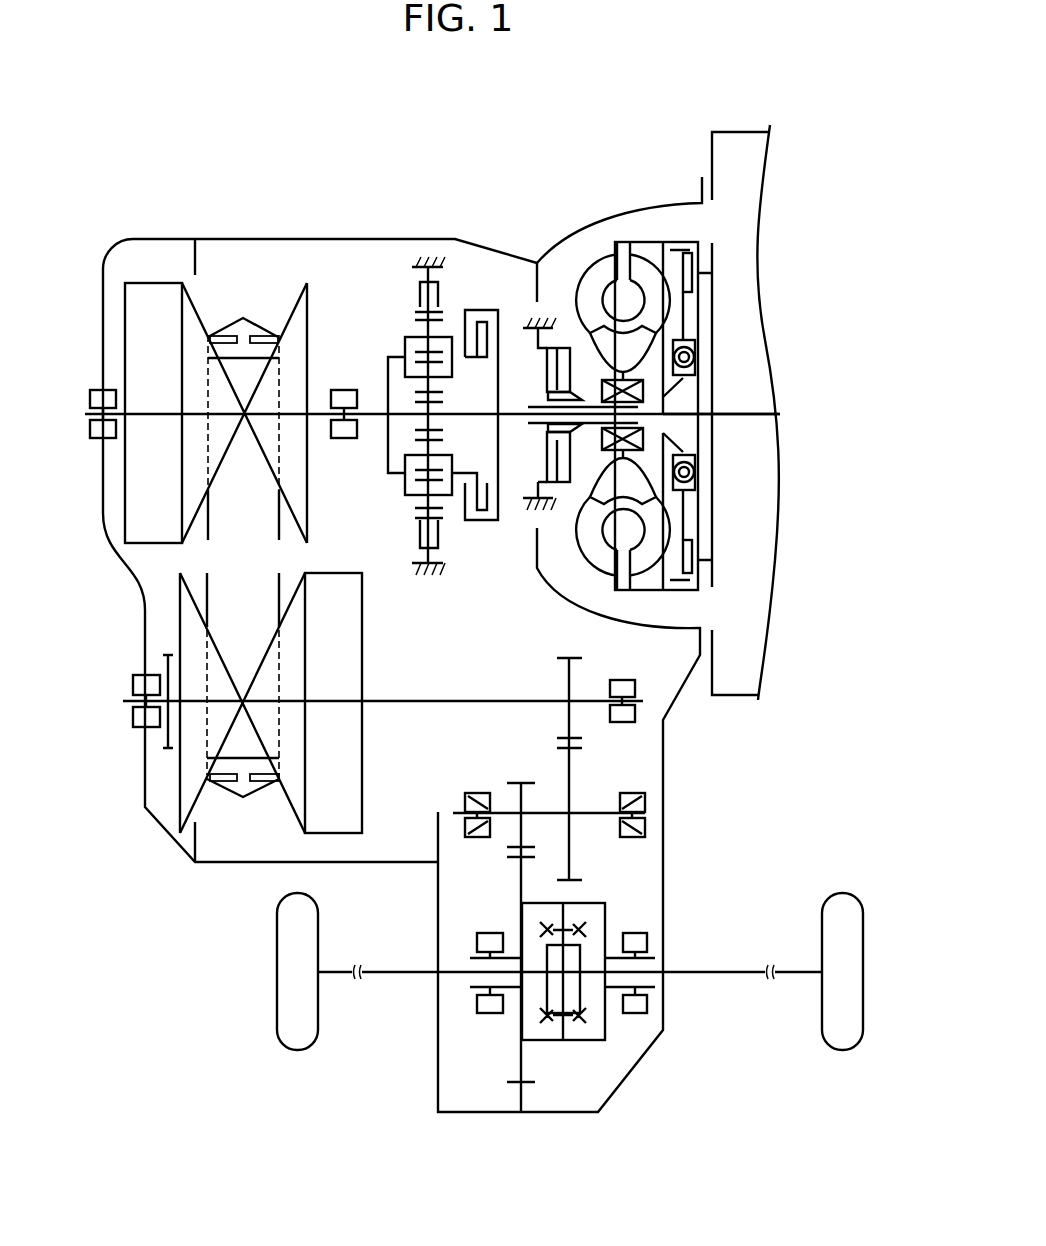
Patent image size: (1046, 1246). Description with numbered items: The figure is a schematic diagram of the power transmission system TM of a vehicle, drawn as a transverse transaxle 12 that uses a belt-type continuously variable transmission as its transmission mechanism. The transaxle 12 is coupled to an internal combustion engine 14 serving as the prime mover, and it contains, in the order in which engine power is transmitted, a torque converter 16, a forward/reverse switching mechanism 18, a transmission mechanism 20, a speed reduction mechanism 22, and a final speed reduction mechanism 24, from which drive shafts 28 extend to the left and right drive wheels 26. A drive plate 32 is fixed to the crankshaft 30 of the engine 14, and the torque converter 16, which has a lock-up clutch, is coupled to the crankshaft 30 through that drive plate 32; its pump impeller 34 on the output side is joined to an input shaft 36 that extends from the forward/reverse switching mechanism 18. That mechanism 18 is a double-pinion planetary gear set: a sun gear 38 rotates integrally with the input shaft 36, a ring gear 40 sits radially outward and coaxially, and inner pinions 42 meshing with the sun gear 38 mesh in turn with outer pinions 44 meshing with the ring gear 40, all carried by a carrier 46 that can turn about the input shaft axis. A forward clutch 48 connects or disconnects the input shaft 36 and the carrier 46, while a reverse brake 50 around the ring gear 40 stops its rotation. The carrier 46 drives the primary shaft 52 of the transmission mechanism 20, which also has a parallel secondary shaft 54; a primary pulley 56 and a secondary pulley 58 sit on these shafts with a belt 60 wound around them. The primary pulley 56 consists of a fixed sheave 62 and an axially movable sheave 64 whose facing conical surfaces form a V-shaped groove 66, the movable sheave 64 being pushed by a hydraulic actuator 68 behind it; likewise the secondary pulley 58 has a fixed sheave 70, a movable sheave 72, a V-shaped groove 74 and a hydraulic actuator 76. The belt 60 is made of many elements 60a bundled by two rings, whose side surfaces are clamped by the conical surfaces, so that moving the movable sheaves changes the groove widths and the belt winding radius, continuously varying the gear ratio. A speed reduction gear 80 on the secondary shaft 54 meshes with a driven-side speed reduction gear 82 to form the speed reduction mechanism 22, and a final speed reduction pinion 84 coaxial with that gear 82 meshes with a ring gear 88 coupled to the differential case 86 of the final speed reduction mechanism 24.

The power transmission system TM is at (140, 928).
The transaxle 12 is at (440, 150).
The internal combustion engine 14 is at (745, 131).
The torque converter 16 is at (654, 369).
The forward/reverse switching mechanism 18 is at (461, 404).
The transmission mechanism 20 is at (412, 524).
The speed reduction mechanism 22 is at (588, 859).
The final speed reduction mechanism 24 is at (570, 968).
The drive wheels 26 is at (292, 1052).
The drive shafts 28 is at (385, 978).
The crankshaft 30 is at (742, 410).
The drive plate 32 is at (712, 490).
The pump impeller 34 is at (668, 298).
The input shaft 36 is at (510, 420).
The sun gear 38 is at (440, 431).
The ring gear 40 is at (416, 510).
The inner pinions 42 is at (440, 393).
The outer pinions 44 is at (415, 315).
The carrier 46 is at (404, 474).
The forward clutch 48 is at (485, 525).
The reverse brake 50 is at (420, 540).
The primary shaft 52 is at (322, 405).
The secondary shaft 54 is at (432, 700).
The primary pulley 56 is at (97, 525).
The secondary pulley 58 is at (135, 818).
The belt 60 is at (244, 403).
The elements 60a is at (224, 347).
The fixed sheave 62 is at (303, 497).
The movable sheave 64 is at (193, 518).
The V-shaped groove 66 is at (215, 385).
The hydraulic actuator 68 is at (157, 297).
The fixed sheave 70 is at (190, 625).
The movable sheave 72 is at (290, 790).
The V-shaped groove 74 is at (265, 740).
The hydraulic actuator 76 is at (350, 807).
The speed reduction gear 80 is at (573, 657).
The driven-side speed reduction gear 82 is at (580, 746).
The final speed reduction pinion 84 is at (527, 782).
The differential case 86 is at (576, 1042).
The ring gear 88 is at (512, 855).